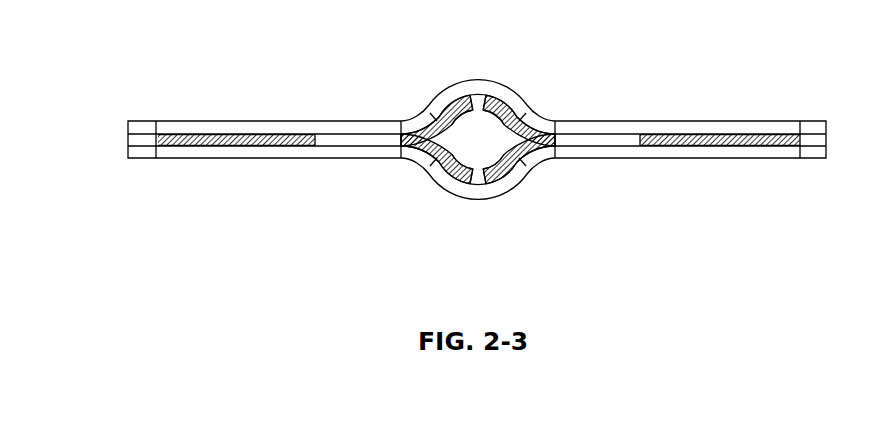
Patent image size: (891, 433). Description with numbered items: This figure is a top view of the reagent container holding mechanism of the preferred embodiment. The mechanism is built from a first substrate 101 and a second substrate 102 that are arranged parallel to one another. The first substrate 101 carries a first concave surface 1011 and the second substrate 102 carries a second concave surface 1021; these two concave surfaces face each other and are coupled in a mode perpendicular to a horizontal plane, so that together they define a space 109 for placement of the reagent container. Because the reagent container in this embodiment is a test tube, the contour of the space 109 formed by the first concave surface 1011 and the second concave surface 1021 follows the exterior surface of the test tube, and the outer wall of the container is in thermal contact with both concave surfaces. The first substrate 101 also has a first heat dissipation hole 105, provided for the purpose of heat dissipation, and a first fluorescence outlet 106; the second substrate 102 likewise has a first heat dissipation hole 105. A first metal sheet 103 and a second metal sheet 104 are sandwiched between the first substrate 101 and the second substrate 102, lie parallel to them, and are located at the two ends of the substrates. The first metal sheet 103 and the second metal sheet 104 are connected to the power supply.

The first substrate 101 is at (392, 122).
The second substrate 102 is at (514, 186).
The first metal sheet 103 is at (263, 146).
The second metal sheet 104 is at (737, 146).
The first heat dissipation hole 105 is at (500, 112).
The first fluorescence outlet 106 is at (462, 105).
The space 109 is at (487, 137).
The first concave surface 1011 is at (479, 118).
The second concave surface 1021 is at (477, 163).